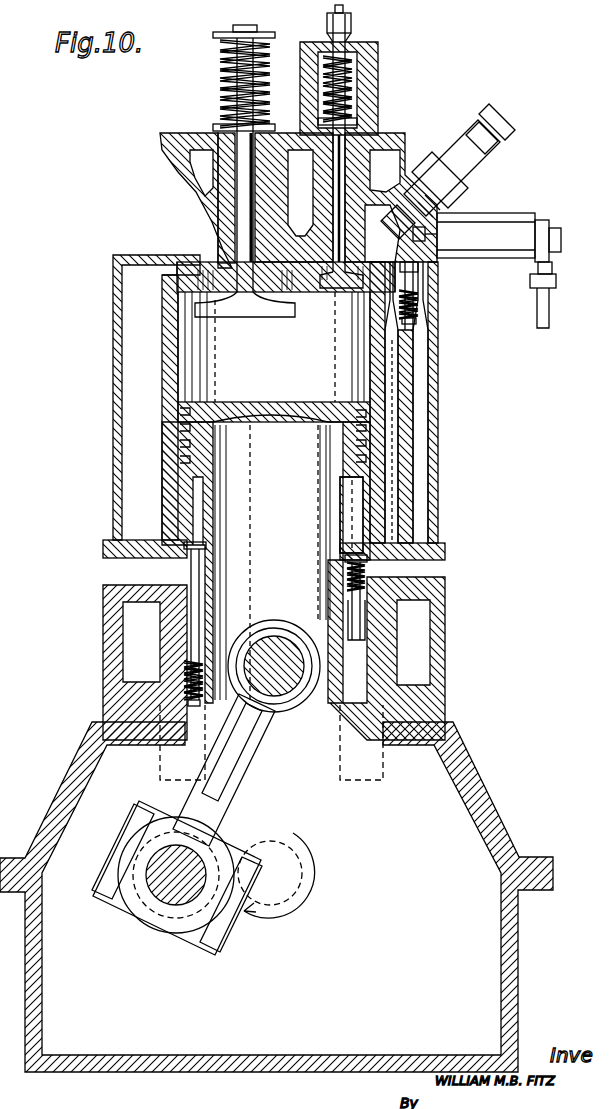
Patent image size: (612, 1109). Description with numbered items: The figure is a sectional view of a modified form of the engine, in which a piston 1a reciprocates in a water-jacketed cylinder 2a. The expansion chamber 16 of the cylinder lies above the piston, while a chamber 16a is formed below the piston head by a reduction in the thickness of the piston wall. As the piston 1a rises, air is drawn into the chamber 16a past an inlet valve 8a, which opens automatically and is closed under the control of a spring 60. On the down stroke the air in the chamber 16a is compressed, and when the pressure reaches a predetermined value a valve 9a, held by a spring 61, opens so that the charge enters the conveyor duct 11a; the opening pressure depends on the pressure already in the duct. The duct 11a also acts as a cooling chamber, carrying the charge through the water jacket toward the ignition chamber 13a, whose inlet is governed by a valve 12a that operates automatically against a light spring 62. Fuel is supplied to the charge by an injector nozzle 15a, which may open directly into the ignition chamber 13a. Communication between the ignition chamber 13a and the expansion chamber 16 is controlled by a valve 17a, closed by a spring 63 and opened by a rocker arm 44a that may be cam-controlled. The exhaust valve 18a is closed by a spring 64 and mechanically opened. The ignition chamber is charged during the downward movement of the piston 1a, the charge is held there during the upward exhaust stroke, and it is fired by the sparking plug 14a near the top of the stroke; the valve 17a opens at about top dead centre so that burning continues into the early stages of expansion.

The piston 1a is at (282, 402).
The cylinder 2a is at (178, 378).
The inlet valve 8a is at (190, 568).
The valve 9a is at (360, 602).
The conveyor duct 11a is at (407, 453).
The valve 12a is at (415, 274).
The ignition chamber 13a is at (428, 246).
The sparking plug 14a is at (462, 200).
The injector nozzle 15a is at (508, 220).
The expansion chamber 16 is at (185, 354).
The chamber 16a is at (345, 496).
The valve 17a is at (338, 290).
The exhaust valve 18a is at (254, 306).
The rocker arm 44a is at (352, 25).
The spring 60 is at (185, 672).
The spring 61 is at (350, 575).
The light spring 62 is at (412, 306).
The spring 63 is at (352, 90).
The spring 64 is at (224, 78).